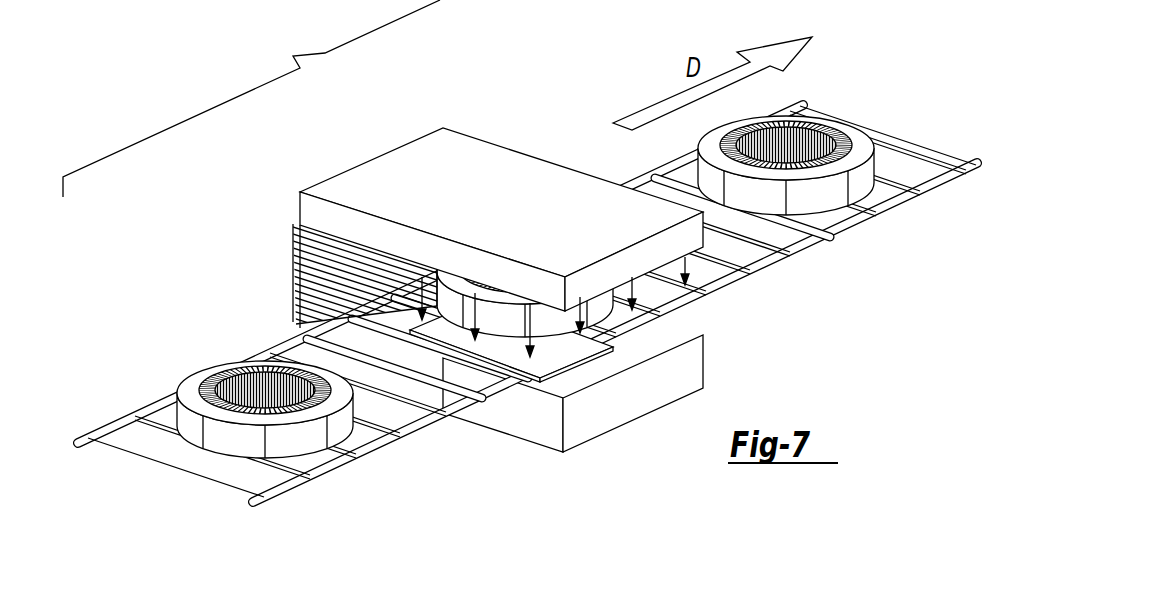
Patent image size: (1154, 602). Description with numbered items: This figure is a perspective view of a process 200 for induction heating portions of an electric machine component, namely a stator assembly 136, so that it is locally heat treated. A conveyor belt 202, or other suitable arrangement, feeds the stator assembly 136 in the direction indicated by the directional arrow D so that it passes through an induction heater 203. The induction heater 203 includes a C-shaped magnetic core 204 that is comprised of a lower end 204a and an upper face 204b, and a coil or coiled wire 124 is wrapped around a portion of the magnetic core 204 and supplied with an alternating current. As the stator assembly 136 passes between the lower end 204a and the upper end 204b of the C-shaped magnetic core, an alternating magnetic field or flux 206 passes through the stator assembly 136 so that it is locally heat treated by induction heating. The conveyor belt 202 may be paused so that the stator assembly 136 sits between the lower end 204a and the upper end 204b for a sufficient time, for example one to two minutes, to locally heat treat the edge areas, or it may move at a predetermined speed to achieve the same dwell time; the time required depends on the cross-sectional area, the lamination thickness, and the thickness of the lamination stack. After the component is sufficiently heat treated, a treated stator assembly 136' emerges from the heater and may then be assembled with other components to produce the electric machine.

The process 200 is at (251, 98).
The conveyor belt 202 is at (122, 427).
The induction heater 203 is at (456, 230).
The C-shaped magnetic core 204 is at (456, 212).
The lower end 204a is at (696, 369).
The upper face 204b is at (432, 143).
The coil 124 is at (292, 240).
The stator assembly 136 is at (380, 369).
The treated stator assembly 136' is at (814, 148).
The alternating magnetic field or flux 206 is at (616, 349).